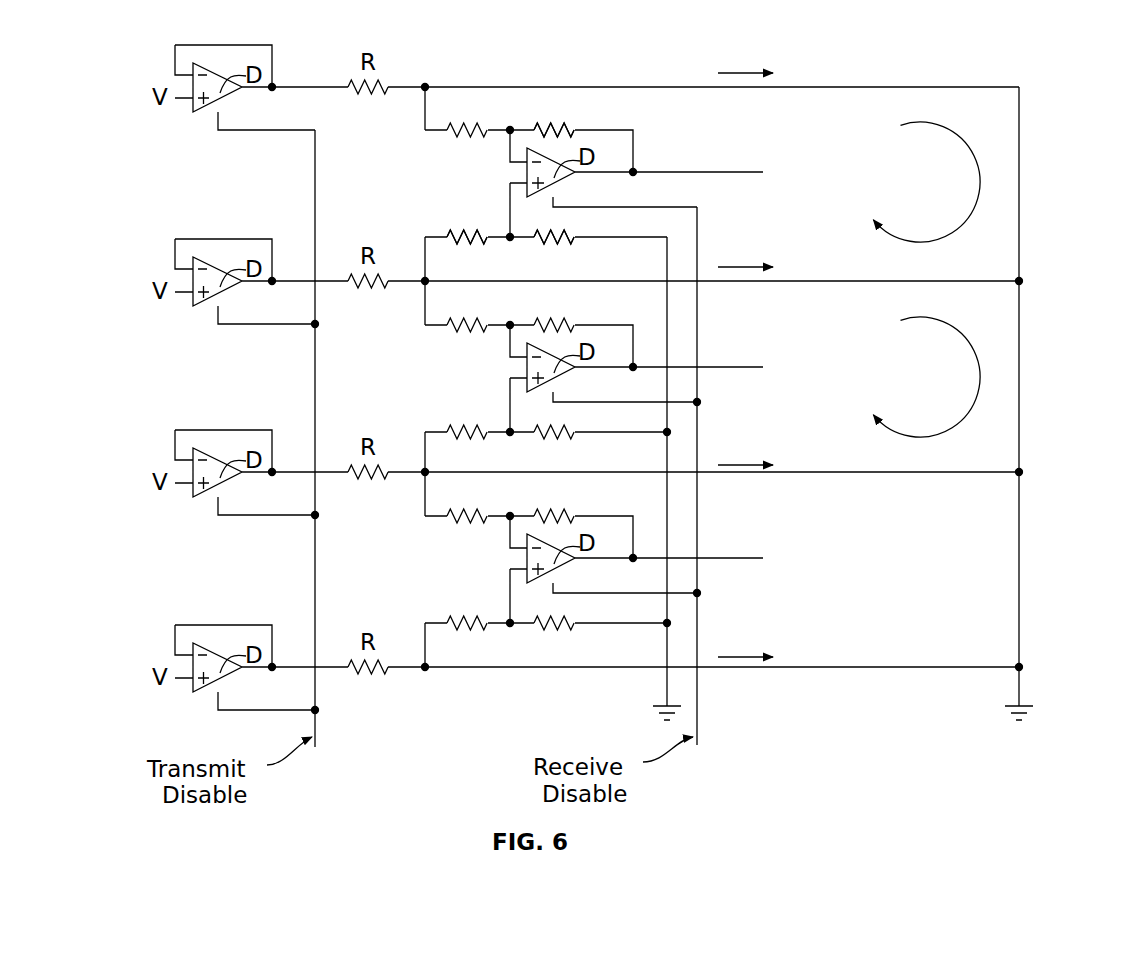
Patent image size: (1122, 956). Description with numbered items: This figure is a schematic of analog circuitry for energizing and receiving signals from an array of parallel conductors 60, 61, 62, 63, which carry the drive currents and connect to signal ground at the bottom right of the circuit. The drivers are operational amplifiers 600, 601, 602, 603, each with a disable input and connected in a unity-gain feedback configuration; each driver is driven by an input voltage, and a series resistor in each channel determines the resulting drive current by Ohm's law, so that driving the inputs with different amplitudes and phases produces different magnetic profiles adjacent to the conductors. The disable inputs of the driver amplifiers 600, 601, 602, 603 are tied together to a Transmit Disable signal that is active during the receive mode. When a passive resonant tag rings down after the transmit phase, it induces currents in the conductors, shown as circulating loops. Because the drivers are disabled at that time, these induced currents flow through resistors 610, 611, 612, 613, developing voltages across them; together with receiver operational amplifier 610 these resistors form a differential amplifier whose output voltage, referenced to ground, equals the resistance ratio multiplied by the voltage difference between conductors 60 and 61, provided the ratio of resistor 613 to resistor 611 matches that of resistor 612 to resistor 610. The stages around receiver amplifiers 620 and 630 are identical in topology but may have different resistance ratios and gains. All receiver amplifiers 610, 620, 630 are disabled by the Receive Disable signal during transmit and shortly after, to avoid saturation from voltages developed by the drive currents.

The driver operational amplifier 600 is at (763, 50).
The driver operational amplifier 601 is at (763, 245).
The driver operational amplifier 602 is at (763, 441).
The driver operational amplifier 603 is at (763, 633).
The receiver operational amplifier 610 is at (475, 150).
The resistor 611 is at (472, 226).
The resistor 612 is at (574, 121).
The resistor 613 is at (573, 222).
The receiver operational amplifier 620 is at (527, 386).
The receiver operational amplifier 630 is at (527, 578).
The parallel conductor 60 is at (999, 168).
The parallel conductor 61 is at (1001, 360).
The parallel conductor 62 is at (1001, 556).
The parallel conductor 63 is at (1006, 678).